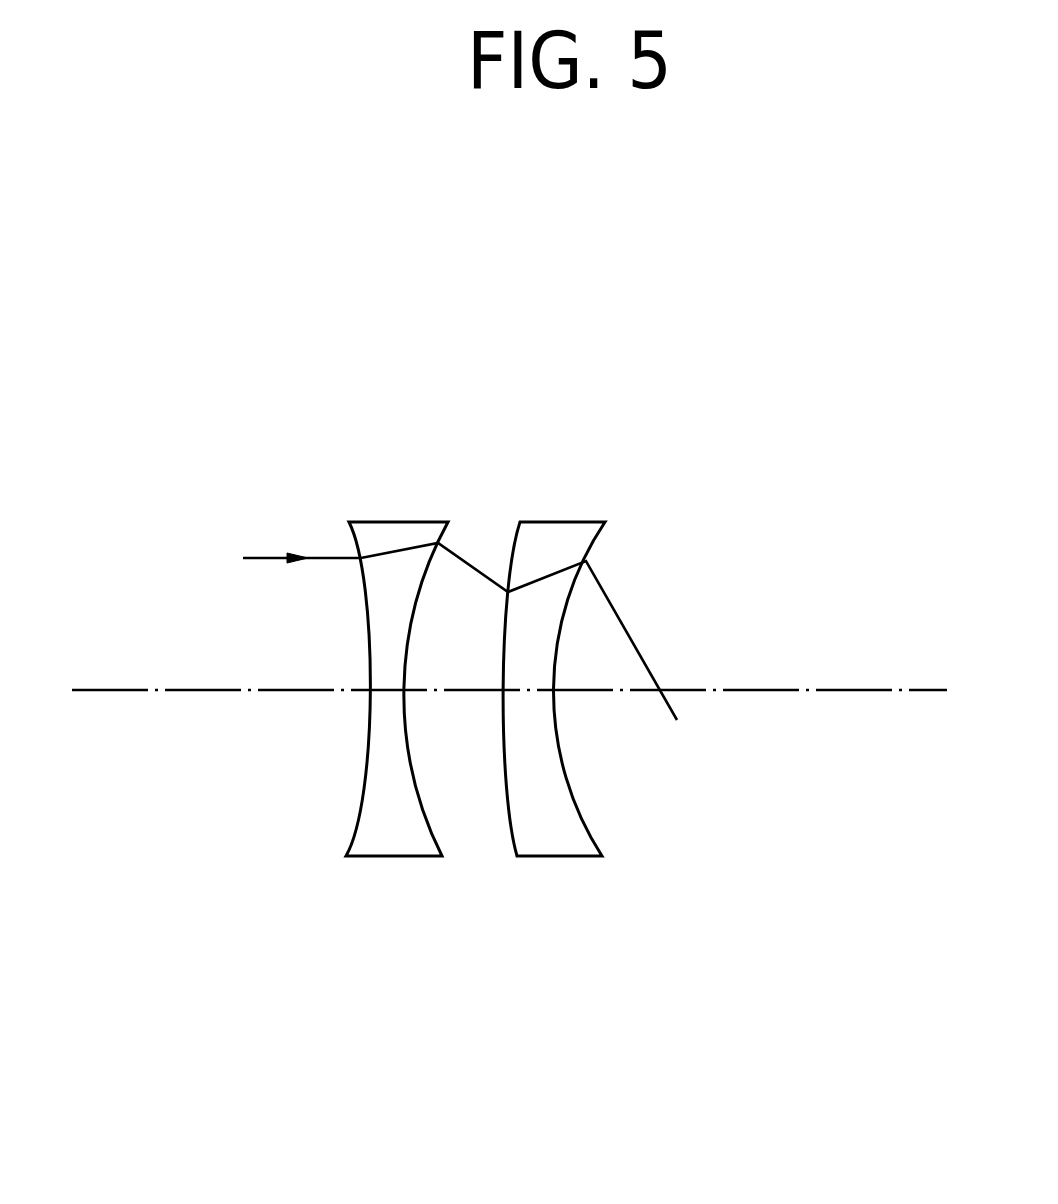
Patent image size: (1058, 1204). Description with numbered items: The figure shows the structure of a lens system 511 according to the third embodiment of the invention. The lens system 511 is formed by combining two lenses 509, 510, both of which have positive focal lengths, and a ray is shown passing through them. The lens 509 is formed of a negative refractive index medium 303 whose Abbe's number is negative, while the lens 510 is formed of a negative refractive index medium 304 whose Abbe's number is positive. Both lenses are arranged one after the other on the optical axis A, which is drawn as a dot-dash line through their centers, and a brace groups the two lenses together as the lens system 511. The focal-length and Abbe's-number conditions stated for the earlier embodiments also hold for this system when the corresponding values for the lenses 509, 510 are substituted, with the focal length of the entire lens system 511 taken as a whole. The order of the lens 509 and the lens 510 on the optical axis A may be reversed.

The optical axis A is at (100, 688).
The negative refractive index medium 303 is at (397, 699).
The negative refractive index medium 304 is at (554, 699).
The lens 509 is at (399, 520).
The lens 510 is at (551, 520).
The lens system 511 is at (474, 739).